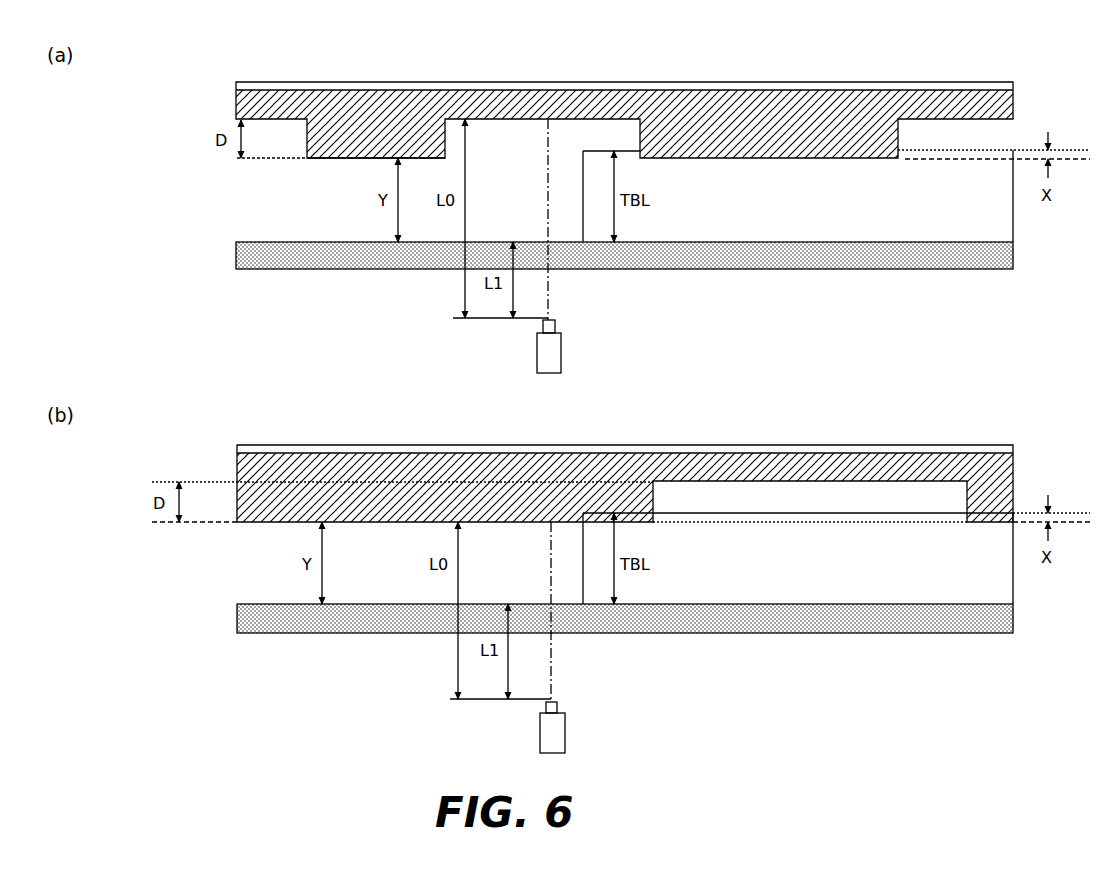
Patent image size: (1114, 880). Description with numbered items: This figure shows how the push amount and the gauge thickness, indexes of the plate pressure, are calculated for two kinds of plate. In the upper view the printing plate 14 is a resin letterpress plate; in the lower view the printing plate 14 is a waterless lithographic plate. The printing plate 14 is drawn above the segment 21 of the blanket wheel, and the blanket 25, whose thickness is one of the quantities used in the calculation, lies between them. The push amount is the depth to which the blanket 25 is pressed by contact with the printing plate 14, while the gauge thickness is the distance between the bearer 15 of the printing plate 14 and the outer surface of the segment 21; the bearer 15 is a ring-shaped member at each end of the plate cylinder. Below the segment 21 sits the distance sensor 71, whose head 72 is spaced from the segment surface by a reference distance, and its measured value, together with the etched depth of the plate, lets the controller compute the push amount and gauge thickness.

The printing plate 14 is at (835, 100).
The bearer 15 is at (330, 162).
The segment 21 is at (1013, 255).
The blanket 25 is at (1013, 225).
The head 72 is at (562, 343).
The distance sensor 71 is at (592, 536).